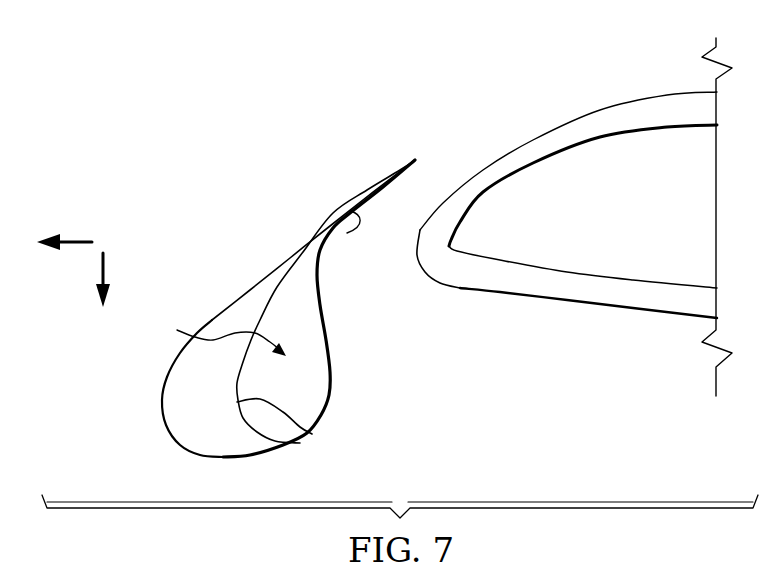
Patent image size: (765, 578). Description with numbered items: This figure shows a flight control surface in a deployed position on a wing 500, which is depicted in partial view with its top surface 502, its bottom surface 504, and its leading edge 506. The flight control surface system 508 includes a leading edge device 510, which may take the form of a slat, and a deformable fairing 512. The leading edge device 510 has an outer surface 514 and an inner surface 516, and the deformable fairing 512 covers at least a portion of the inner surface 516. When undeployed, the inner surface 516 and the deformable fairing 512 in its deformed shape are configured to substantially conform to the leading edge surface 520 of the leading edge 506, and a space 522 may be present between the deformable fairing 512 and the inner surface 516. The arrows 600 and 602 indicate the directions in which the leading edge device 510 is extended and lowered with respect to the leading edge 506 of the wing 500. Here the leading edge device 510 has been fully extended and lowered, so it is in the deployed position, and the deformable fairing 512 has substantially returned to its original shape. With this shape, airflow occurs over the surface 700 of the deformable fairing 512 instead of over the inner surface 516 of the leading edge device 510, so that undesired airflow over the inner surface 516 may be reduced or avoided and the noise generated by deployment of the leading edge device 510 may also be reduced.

The wing 500 is at (533, 331).
The top surface 502 is at (640, 95).
The bottom surface 504 is at (643, 313).
The leading edge 506 is at (443, 232).
The flight control surface system 508 is at (266, 146).
The leading edge device 510 is at (165, 425).
The deformable fairing 512 is at (350, 205).
The outer surface 514 is at (287, 250).
The inner surface 516 is at (312, 434).
The leading edge surface 520 is at (432, 205).
The space 522 is at (209, 335).
The arrow 600 is at (73, 240).
The arrow 602 is at (100, 270).
The surface 700 is at (332, 363).